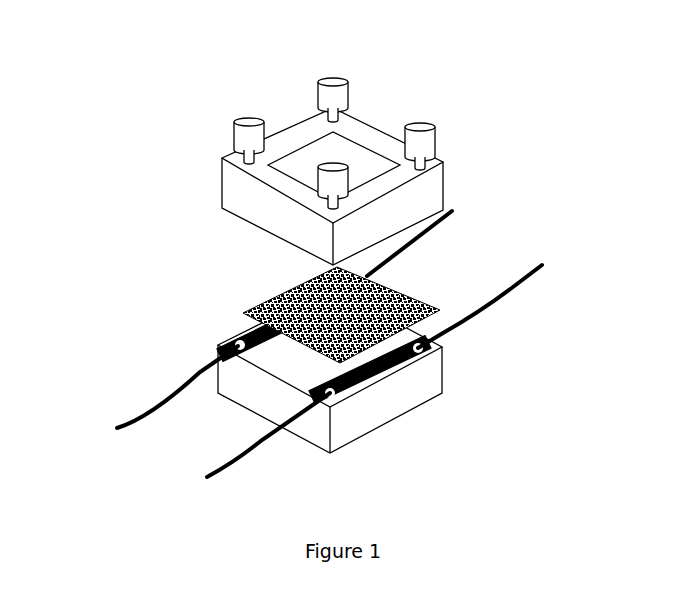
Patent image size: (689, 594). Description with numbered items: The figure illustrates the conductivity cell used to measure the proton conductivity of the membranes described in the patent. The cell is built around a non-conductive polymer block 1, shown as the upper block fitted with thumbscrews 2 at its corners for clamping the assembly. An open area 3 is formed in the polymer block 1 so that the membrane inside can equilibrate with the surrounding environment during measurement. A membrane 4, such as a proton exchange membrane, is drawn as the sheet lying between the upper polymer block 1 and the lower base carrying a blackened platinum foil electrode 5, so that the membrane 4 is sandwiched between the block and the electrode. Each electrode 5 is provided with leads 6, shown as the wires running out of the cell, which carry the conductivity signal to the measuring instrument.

The non-conductive polymer block 1 is at (438, 187).
The thumbscrews 2 is at (430, 140).
The open area 3 is at (297, 168).
The membrane 4 is at (277, 300).
The blackened platinum foil electrode 5 is at (240, 325).
The leads 6 is at (145, 405).